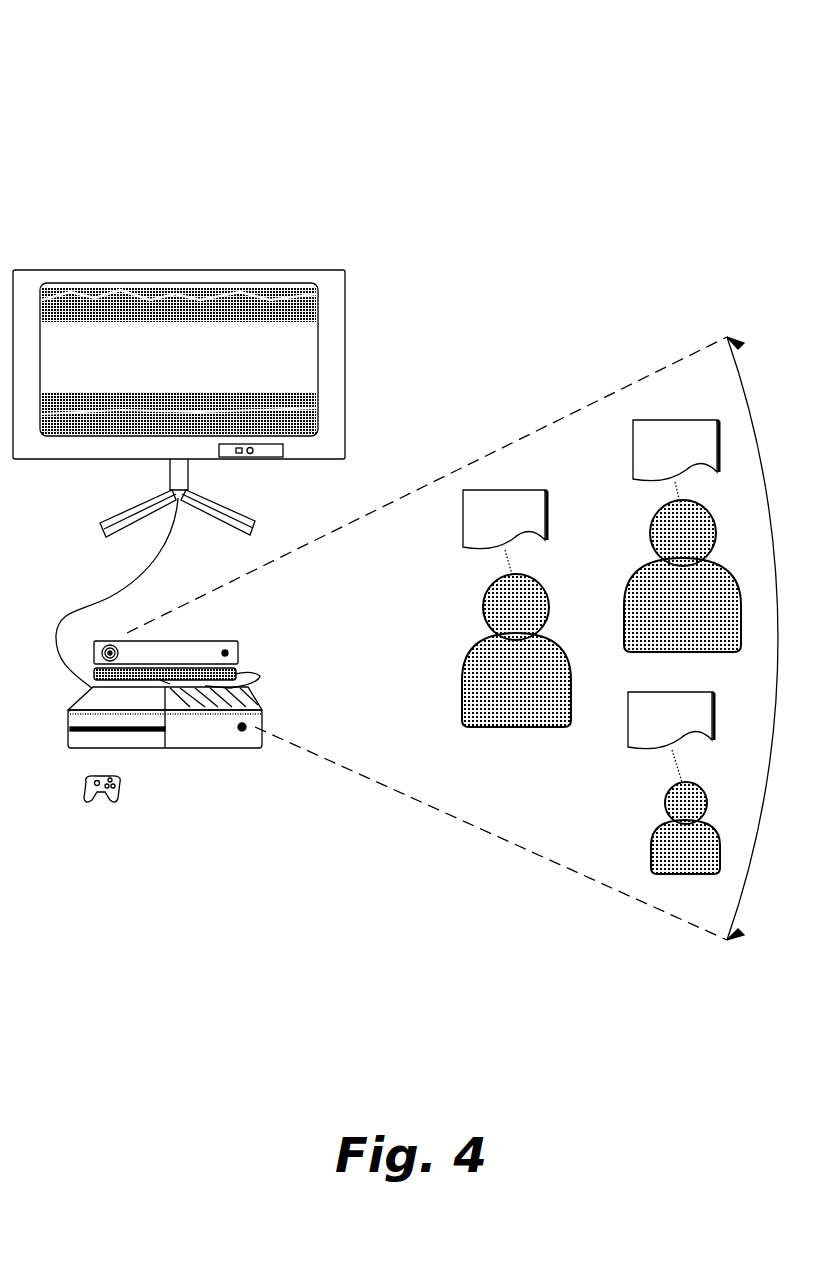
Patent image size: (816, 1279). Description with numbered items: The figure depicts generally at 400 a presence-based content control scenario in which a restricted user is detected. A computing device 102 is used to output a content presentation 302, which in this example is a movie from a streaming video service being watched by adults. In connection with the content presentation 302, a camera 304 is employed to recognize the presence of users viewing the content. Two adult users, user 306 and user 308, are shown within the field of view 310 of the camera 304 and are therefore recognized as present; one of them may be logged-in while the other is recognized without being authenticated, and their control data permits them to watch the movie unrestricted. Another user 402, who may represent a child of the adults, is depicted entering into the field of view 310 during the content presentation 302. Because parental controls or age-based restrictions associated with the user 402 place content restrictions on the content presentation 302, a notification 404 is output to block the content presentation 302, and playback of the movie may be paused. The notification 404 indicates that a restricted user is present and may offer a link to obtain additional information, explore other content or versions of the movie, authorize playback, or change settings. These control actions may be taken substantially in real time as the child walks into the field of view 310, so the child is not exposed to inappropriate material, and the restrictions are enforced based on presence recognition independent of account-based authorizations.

The presence-based content control scenario 400 is at (117, 50).
The content presentation 302 is at (182, 283).
The notification 404 is at (314, 358).
The camera 304 is at (163, 642).
The computing device 102 is at (118, 748).
The field of view 310 is at (505, 420).
The user 306 is at (516, 625).
The user 308 is at (682, 550).
The user 402 is at (588, 948).